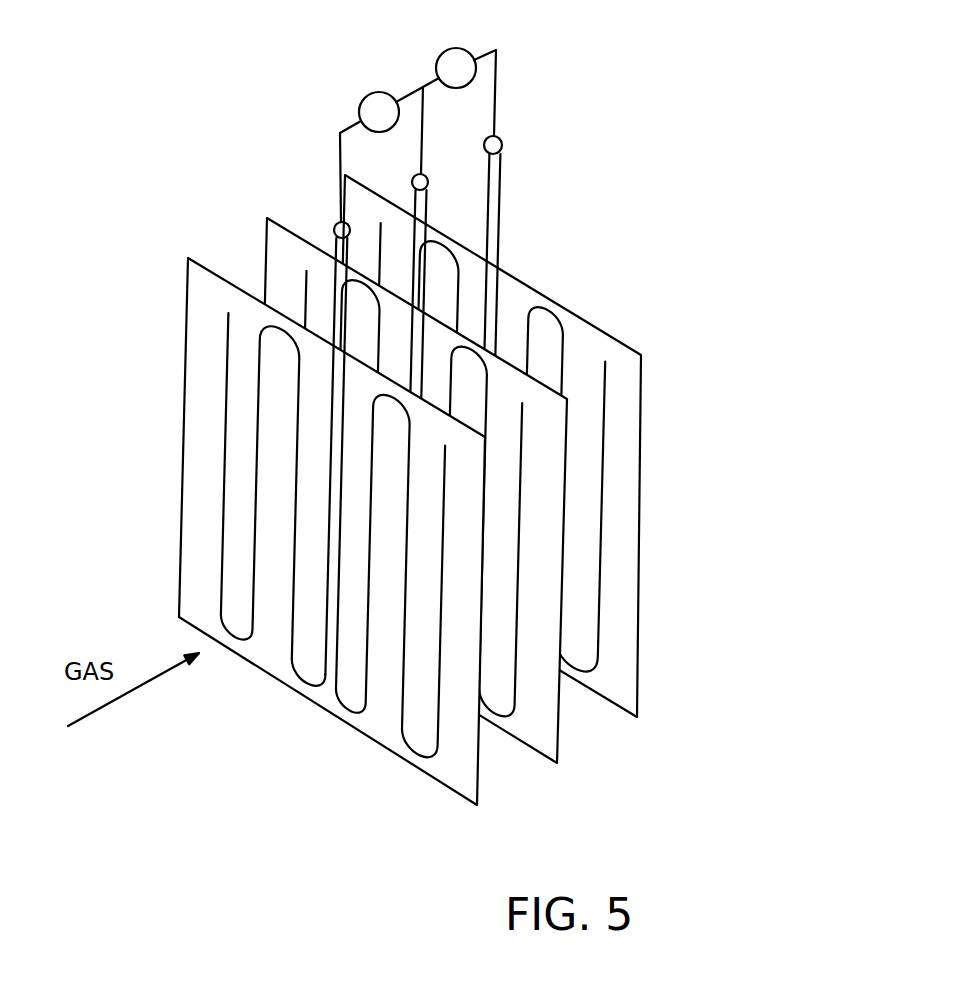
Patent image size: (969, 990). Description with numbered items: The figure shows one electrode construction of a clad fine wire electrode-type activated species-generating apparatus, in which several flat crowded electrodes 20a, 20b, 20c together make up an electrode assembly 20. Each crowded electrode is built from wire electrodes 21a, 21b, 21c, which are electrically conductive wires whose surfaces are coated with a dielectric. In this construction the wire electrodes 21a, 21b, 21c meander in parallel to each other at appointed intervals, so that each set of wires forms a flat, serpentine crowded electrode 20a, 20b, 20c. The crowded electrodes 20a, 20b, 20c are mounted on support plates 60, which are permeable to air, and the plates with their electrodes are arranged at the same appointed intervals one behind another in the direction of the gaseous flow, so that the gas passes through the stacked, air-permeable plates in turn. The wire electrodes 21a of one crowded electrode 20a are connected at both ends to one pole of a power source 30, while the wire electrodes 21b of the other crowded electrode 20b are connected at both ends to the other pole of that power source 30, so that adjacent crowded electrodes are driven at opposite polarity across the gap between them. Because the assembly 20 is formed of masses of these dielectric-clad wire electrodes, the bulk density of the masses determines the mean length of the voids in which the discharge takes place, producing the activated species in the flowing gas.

The assembly 20 is at (422, 514).
The crowded electrode 20a is at (266, 531).
The crowded electrode 20b is at (527, 509).
The crowded electrode 20c is at (566, 446).
The wire electrode 21a is at (222, 509).
The wire electrode 21b is at (520, 587).
The wire electrode 21c is at (609, 431).
The power source 30 is at (372, 92).
The support plate 60 is at (210, 270).